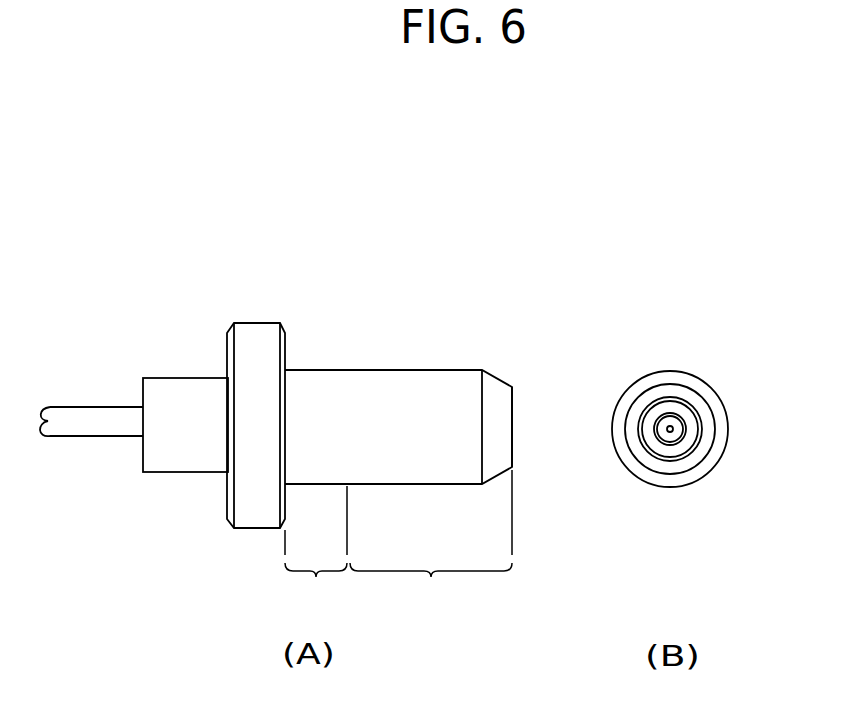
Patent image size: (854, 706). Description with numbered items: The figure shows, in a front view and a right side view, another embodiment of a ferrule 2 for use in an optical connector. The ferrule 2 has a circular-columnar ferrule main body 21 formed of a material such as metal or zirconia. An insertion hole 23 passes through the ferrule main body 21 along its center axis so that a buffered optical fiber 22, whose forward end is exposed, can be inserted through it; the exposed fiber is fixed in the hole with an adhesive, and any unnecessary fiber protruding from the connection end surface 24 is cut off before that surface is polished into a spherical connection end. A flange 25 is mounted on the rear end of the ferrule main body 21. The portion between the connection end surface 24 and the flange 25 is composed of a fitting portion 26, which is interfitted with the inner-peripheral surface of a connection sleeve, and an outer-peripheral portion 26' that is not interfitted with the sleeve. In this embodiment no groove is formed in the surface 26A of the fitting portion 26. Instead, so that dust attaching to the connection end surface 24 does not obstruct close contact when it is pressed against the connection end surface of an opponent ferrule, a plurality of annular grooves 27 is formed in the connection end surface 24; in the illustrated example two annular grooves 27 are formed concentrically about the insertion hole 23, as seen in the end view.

The ferrule 2 is at (479, 292).
The ferrule main body 21 is at (309, 366).
The buffered optical fiber 22 is at (88, 415).
The insertion hole 23 is at (674, 428).
The connection end surface 24 is at (513, 435).
The flange 25 is at (258, 337).
The fitting portion 26 is at (429, 544).
The outer-peripheral portion 26' is at (316, 574).
The surface of the fitting portion 26A is at (427, 390).
The annular grooves 27 is at (703, 440).